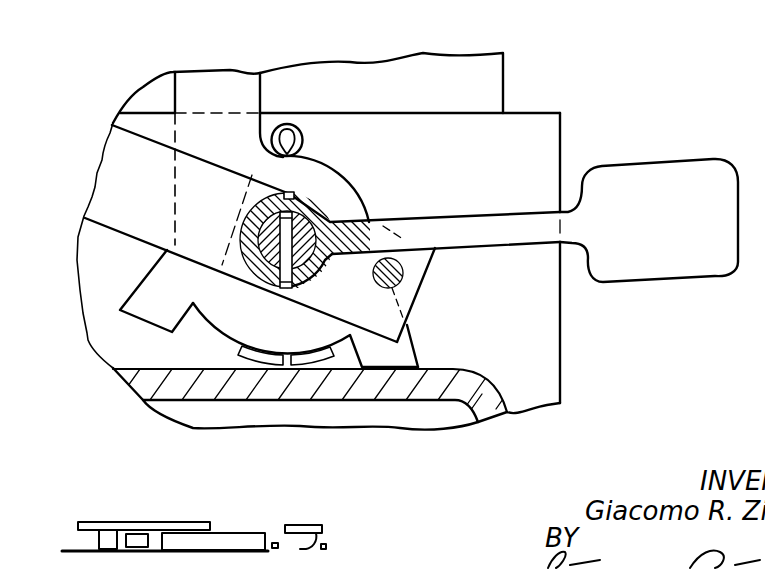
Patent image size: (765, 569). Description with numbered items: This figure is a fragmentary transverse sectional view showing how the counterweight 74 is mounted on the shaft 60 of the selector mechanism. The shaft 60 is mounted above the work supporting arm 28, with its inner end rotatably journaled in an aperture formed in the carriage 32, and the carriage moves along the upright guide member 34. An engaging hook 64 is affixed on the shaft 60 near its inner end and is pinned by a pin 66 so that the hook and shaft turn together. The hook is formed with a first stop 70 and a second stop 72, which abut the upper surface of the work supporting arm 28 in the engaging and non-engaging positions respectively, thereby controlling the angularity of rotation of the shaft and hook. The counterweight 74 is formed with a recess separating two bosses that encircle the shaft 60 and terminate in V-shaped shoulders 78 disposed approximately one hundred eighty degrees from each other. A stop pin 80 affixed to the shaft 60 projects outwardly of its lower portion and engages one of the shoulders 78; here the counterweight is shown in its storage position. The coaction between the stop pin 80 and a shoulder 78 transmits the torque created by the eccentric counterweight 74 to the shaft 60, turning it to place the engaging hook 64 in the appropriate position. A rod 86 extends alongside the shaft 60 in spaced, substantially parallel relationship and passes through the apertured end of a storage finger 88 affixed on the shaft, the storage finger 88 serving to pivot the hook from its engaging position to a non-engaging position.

The work supporting arm 28 is at (462, 378).
The carriage 32 is at (545, 318).
The upright guide member 34 is at (433, 70).
The shaft 60 is at (322, 278).
The engaging hook 64 is at (215, 78).
The pin 66 is at (298, 128).
The first stop 70 is at (415, 352).
The second stop 72 is at (140, 318).
The counterweight 74 is at (660, 180).
The V-shaped shoulders 78 is at (292, 193).
The stop pin 80 is at (262, 234).
The rod 86 is at (403, 275).
The storage finger 88 is at (105, 168).